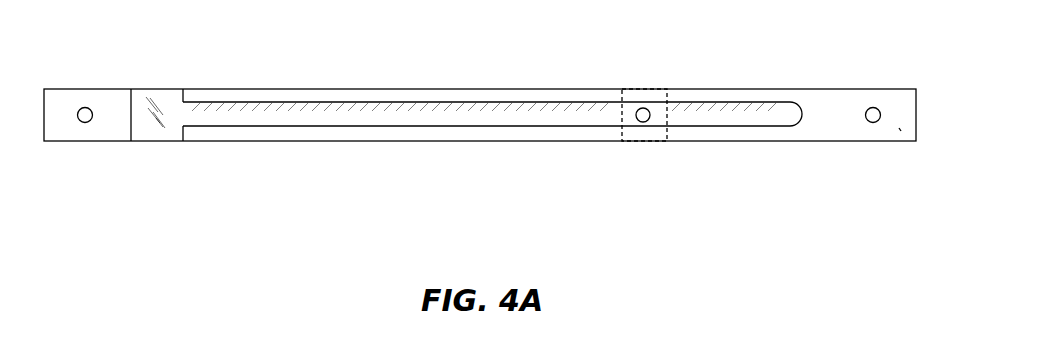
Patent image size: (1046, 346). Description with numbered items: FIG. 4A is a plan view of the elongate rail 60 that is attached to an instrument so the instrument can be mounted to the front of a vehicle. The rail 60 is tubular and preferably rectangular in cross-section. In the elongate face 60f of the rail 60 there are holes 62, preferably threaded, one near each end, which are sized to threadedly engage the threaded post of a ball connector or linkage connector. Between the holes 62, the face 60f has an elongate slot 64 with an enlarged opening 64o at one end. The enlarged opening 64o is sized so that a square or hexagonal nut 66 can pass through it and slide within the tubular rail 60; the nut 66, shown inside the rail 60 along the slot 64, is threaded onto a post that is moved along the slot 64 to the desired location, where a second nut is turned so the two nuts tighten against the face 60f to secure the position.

The rail 60 is at (907, 88).
The elongate face 60f is at (899, 128).
The holes 62 is at (84, 107).
The elongate slot 64 is at (478, 110).
The enlarged opening 64o is at (131, 84).
The nut 66 is at (630, 110).